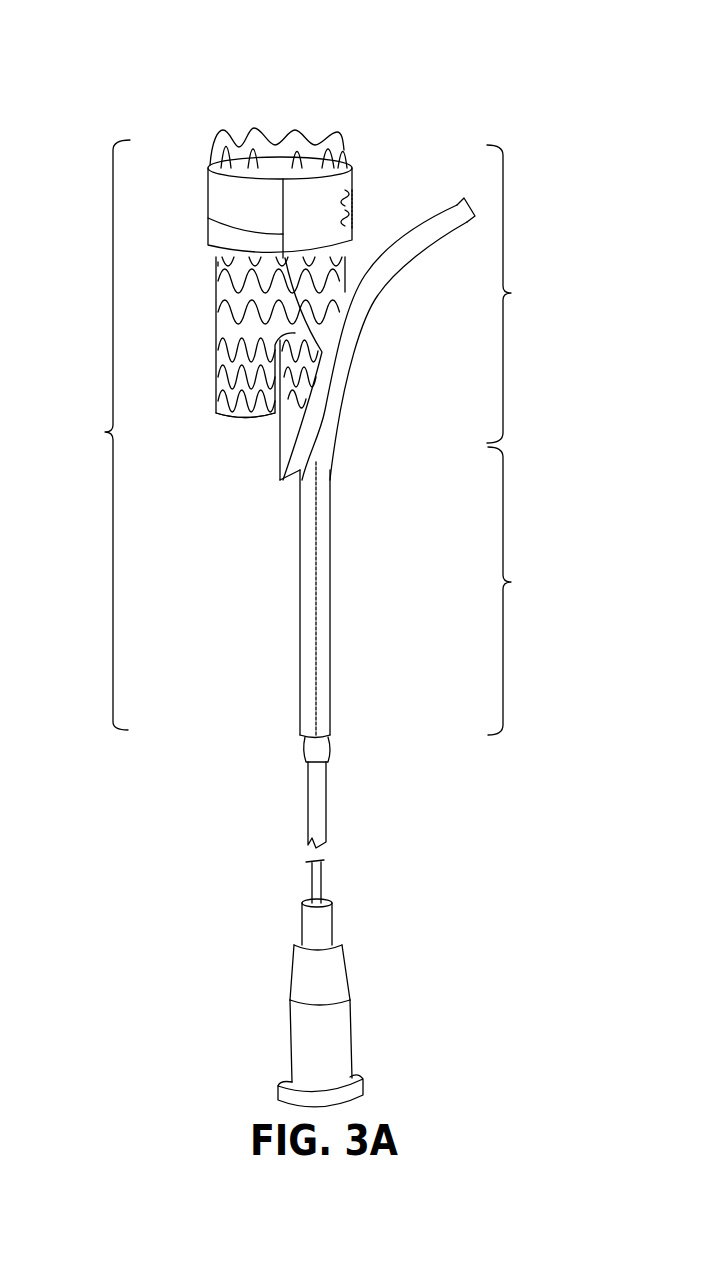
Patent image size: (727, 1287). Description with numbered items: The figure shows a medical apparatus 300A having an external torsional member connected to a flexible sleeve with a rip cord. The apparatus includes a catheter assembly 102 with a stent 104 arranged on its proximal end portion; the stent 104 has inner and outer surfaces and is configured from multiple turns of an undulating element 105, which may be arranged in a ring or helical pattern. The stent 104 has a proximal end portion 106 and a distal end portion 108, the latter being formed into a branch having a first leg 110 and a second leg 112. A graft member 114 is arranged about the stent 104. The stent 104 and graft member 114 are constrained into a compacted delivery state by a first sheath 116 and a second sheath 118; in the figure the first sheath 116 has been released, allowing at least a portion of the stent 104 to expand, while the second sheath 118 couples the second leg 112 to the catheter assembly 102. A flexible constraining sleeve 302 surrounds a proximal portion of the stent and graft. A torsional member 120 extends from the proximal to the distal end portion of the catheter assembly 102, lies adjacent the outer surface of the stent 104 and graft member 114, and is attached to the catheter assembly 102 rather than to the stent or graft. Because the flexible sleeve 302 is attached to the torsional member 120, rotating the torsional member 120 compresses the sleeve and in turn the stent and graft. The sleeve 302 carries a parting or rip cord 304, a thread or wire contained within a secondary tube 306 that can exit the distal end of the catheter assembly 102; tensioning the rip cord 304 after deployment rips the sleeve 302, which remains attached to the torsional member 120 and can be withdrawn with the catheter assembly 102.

The medical apparatus 300A is at (352, 34).
The catheter assembly 102 is at (334, 802).
The stent 104 is at (97, 435).
The undulating element 105 is at (220, 373).
The proximal end portion 106 is at (520, 294).
The distal end portion 108 is at (521, 591).
The first leg 110 is at (245, 417).
The second leg 112 is at (300, 682).
The graft member 114 is at (221, 329).
The first sheath 116 is at (386, 268).
The second sheath 118 is at (332, 506).
The torsional member 120 is at (348, 143).
The flexible constraining sleeve 302 is at (208, 189).
The rip cord 304 is at (207, 220).
The secondary tube 306 is at (285, 442).